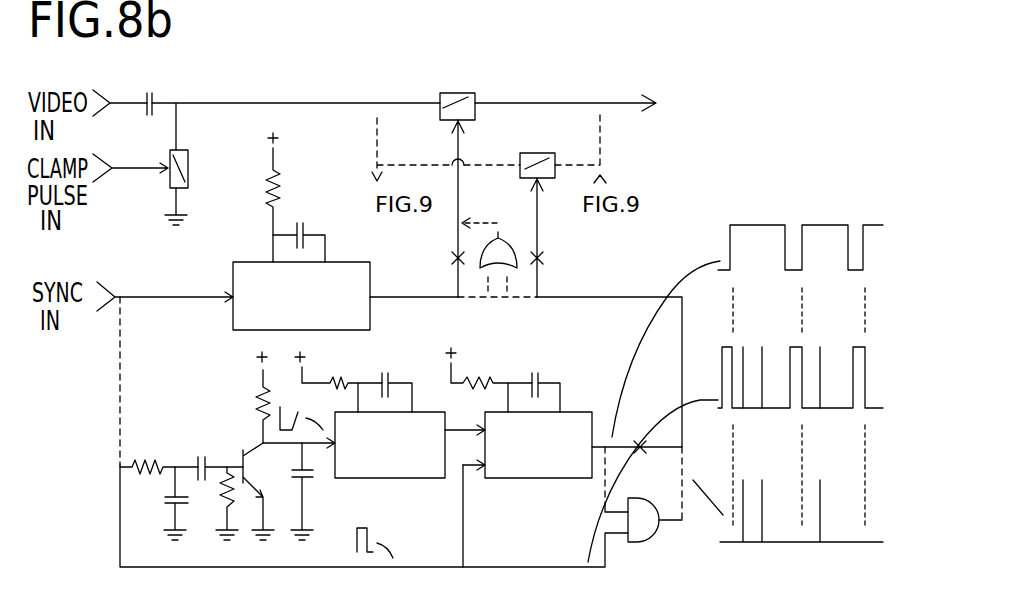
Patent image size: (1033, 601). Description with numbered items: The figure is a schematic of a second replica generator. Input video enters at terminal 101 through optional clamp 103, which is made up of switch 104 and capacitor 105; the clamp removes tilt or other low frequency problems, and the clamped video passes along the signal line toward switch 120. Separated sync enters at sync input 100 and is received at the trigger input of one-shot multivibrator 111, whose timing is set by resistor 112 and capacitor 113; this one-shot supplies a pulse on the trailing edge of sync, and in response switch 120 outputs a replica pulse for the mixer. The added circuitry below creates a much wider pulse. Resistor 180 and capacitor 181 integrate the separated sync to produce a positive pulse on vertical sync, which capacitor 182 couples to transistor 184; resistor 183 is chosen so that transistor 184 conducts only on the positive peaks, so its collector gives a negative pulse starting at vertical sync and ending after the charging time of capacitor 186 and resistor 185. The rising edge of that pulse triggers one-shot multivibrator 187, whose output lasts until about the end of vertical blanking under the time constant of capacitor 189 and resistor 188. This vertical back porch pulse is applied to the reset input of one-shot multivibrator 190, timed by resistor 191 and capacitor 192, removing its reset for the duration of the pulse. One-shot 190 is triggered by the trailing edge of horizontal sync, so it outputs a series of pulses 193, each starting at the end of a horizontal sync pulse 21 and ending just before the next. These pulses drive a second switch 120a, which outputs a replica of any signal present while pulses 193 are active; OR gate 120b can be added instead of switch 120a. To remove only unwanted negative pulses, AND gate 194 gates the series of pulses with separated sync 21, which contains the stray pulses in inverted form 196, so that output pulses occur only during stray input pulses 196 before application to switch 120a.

The video input terminal 101 is at (107, 92).
The capacitor 105 is at (158, 92).
The clamp 103 is at (126, 142).
The switch 104 is at (140, 187).
The sync input / circuit 100 is at (158, 273).
The one-shot multivibrator 111 is at (247, 255).
The timing resistor 112 is at (292, 197).
The timing capacitor 113 is at (306, 233).
The switch 120 is at (440, 127).
The second switch 120a is at (535, 146).
The OR gate 120b is at (491, 274).
The pulses 193 is at (757, 222).
The horizontal sync pulse 21 is at (722, 343).
The stray input pulses 196 is at (820, 478).
The resistor 180 is at (159, 451).
The capacitor 181 is at (160, 503).
The capacitor 182 is at (215, 453).
The resistor 183 is at (213, 503).
The transistor 184 is at (262, 491).
The resistor 185 is at (246, 397).
The capacitor 186 is at (314, 491).
The one-shot multivibrator 187 is at (365, 487).
The resistor 188 is at (338, 379).
The capacitor 189 is at (392, 379).
The one-shot multivibrator 190 is at (512, 487).
The timing resistor 191 is at (489, 379).
The timing capacitor 192 is at (540, 379).
The AND gate 194 is at (647, 553).